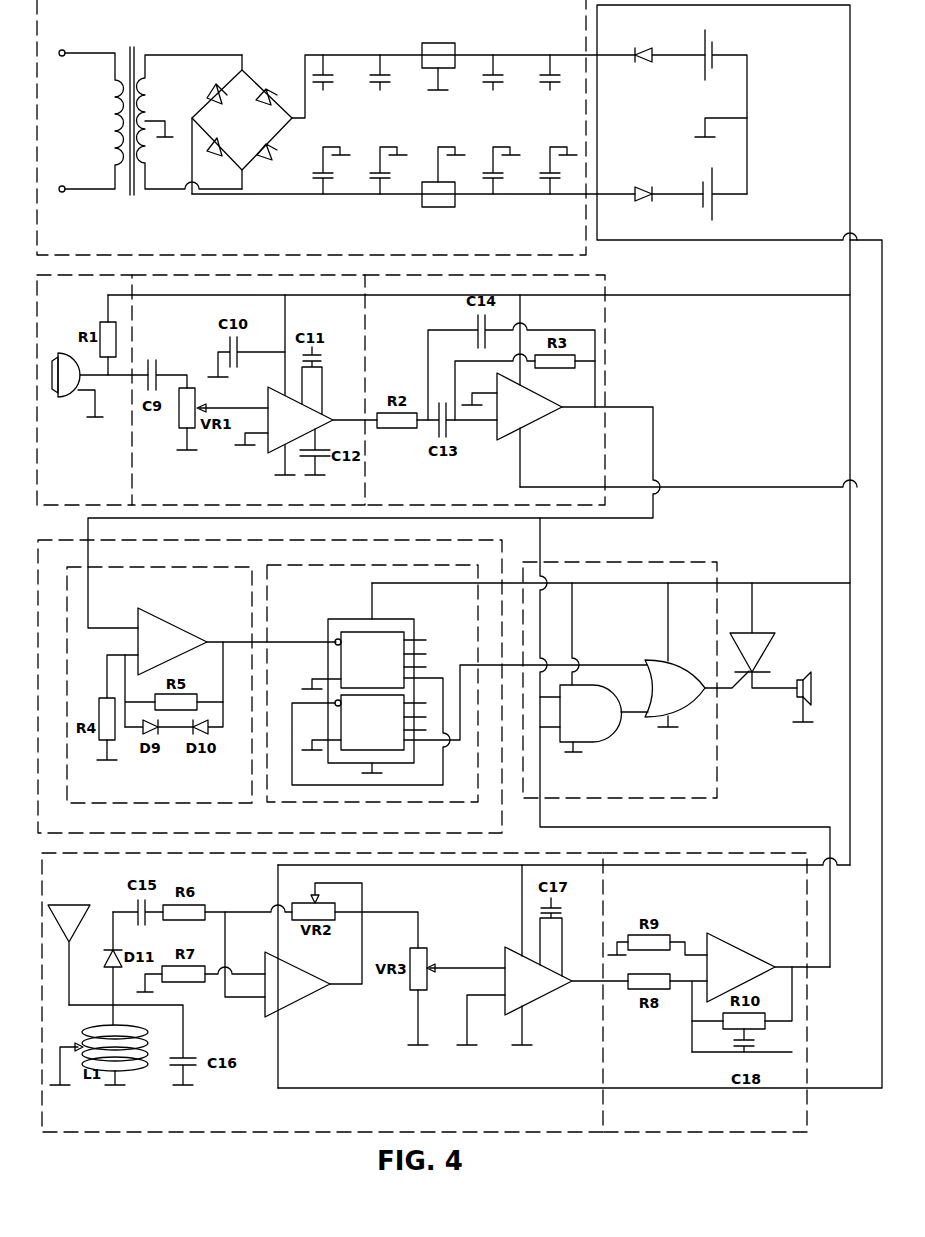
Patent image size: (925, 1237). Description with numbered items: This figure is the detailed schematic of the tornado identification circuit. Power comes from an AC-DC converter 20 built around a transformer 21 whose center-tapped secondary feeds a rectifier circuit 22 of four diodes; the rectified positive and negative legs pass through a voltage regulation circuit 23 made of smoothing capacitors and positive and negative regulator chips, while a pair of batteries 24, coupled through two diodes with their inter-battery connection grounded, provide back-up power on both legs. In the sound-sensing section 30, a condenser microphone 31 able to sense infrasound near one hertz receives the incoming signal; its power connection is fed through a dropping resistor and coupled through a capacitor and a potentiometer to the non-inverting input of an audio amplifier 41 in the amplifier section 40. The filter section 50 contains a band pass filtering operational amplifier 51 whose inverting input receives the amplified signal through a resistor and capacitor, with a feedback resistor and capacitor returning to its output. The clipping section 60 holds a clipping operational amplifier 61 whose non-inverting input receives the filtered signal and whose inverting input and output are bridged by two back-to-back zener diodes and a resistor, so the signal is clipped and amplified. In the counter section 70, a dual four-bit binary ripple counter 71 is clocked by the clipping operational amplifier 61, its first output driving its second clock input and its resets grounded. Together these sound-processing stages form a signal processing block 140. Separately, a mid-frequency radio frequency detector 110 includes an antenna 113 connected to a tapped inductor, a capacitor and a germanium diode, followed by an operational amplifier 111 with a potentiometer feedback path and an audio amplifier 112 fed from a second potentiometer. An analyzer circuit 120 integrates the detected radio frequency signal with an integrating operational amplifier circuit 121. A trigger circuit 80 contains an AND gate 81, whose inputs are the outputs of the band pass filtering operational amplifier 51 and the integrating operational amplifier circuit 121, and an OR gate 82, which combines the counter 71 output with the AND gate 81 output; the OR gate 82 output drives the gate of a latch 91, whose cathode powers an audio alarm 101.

The AC-DC converter 20 is at (311, 127).
The transformer 21 is at (135, 52).
The rectifier circuit 22 is at (243, 124).
The voltage regulation circuit 23 is at (413, 125).
The batteries 24 is at (708, 37).
The sound detecting unit 30 is at (84, 390).
The condenser microphone 31 is at (100, 385).
The amplifier unit 40 is at (248, 390).
The audio amplifier 41 is at (316, 422).
The filter unit 50 is at (485, 390).
The band pass filtering operational amplifier 51 is at (528, 407).
The comparator unit 60 is at (159, 685).
The clipping operational amplifier 61 is at (231, 641).
The timer unit 70 is at (372, 683).
The dual 4-bit binary ripple counter 71 is at (469, 684).
The trigger circuit 80 is at (620, 680).
The AND gate 81 is at (594, 671).
The OR gate 82 is at (692, 656).
The latch 91 is at (763, 635).
The audio alarm 101 is at (796, 665).
The mid-frequency radio frequency detector 110 is at (322, 992).
The operational amplifier 111 is at (298, 984).
The audio amplifier 112 is at (537, 976).
The antenna 113 is at (73, 903).
The analyzer circuit 120 is at (705, 992).
The integrating operational amplifier circuit 121 is at (739, 967).
The signal processing unit 140 is at (270, 687).